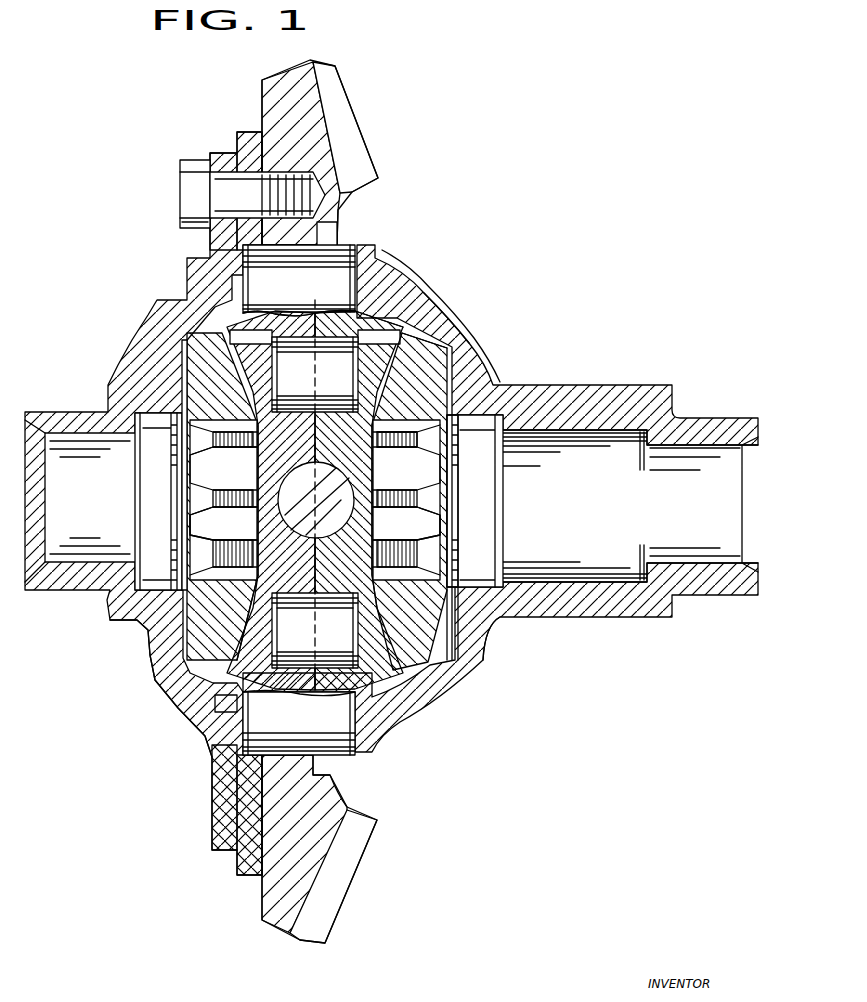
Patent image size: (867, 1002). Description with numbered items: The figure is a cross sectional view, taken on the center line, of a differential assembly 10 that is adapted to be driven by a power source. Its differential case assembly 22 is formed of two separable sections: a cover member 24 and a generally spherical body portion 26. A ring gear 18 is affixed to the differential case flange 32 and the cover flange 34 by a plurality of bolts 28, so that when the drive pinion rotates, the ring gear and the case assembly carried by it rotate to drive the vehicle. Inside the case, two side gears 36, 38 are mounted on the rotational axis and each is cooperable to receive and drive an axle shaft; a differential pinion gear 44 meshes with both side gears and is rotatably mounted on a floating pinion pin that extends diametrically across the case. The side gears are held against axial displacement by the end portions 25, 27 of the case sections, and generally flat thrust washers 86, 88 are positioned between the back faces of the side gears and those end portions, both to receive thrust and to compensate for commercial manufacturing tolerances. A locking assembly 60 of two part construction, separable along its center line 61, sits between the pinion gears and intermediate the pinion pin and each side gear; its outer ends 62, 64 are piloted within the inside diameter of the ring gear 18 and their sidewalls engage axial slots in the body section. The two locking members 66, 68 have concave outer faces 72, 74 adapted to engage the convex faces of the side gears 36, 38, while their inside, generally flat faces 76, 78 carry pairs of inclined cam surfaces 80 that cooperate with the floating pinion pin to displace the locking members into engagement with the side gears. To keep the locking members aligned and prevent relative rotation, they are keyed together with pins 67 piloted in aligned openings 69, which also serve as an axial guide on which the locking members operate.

The differential assembly 10 is at (456, 304).
The ring gear 18 is at (342, 112).
The differential case assembly 22 is at (492, 376).
The cover member section 24 is at (152, 303).
The end portion of case section 25 is at (173, 630).
The body portion section 26 is at (577, 384).
The end portion of case section 27 is at (495, 638).
The bolts 28 is at (180, 198).
The differential case flange 32 is at (243, 132).
The cover flange 34 is at (210, 150).
The side gear 36 is at (173, 499).
The side gear 38 is at (482, 507).
The differential pinion gear 44 is at (327, 513).
The locking assembly 60 is at (388, 314).
The center line of locking assembly 61 is at (350, 301).
The outer end of locking assembly 62 is at (308, 296).
The outer end of locking assembly 64 is at (320, 729).
The locking member 66 is at (200, 518).
The pins 67 is at (345, 377).
The locking member 68 is at (362, 525).
The aligned openings 69 is at (295, 410).
The outer face of locking member 72 is at (200, 467).
The outer face of locking member 74 is at (447, 475).
The inside flat face of locking member 76 is at (420, 358).
The inside flat face of locking member 78 is at (257, 615).
The inclined cam surfaces 80 is at (380, 460).
The thrust washer 86 is at (182, 370).
The thrust washer 88 is at (486, 652).